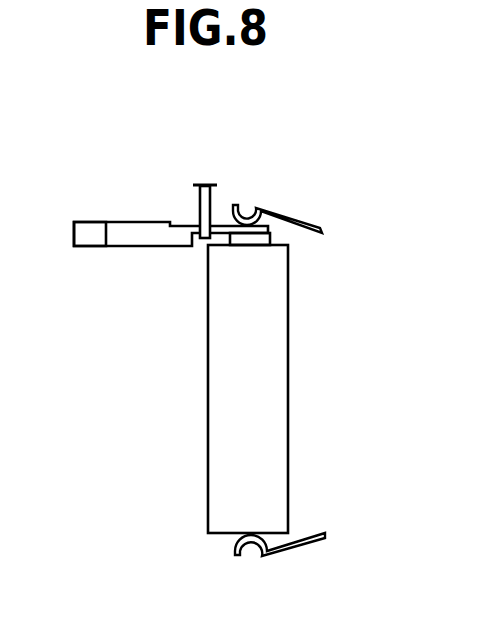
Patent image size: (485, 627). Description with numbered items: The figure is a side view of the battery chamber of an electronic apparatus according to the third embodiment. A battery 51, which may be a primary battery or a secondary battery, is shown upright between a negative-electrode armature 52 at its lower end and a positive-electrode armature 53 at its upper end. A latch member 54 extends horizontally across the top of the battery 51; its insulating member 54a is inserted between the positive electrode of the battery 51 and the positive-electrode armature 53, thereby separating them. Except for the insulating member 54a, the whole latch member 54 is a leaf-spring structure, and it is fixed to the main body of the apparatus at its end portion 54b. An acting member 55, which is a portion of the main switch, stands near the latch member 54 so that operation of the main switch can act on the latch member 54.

The battery 51 is at (278, 363).
The negative-electrode armature 52 is at (305, 542).
The positive-electrode armature 53 is at (308, 220).
The latch member 54 is at (125, 223).
The insulating member 54a is at (222, 223).
The end portion 54b is at (88, 246).
The acting member 55 is at (198, 202).